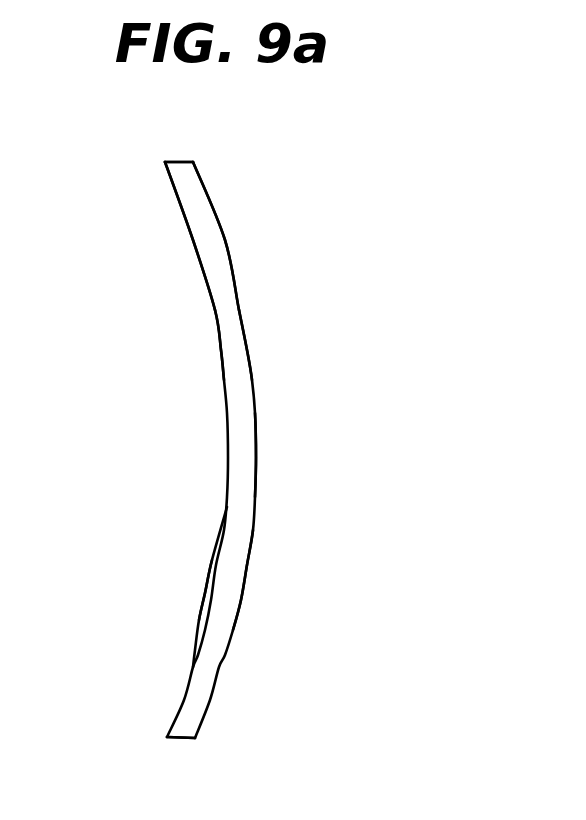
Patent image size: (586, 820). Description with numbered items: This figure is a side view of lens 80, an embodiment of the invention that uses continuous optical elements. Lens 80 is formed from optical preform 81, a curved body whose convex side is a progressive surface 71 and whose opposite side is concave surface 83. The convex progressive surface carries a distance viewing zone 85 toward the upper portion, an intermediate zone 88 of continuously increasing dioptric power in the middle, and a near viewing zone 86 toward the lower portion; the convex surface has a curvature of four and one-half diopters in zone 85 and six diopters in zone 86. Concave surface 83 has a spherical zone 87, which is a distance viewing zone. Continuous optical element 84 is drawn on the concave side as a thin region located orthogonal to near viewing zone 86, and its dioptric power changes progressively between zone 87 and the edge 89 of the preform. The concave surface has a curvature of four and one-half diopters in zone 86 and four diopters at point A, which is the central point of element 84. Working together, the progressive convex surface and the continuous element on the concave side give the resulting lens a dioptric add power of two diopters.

The lens 80 is at (230, 160).
The optical preform 81 is at (165, 160).
The outer convex surface 71 is at (227, 239).
The concave surface 83 is at (194, 240).
The distance viewing zone 85 is at (248, 350).
The spherical zone 87 is at (220, 350).
The intermediate zone 88 is at (256, 457).
The continuous optical element 84 is at (212, 560).
The point A is at (206, 592).
The near viewing zone 86 is at (243, 588).
The edge of the preform 89 is at (167, 737).